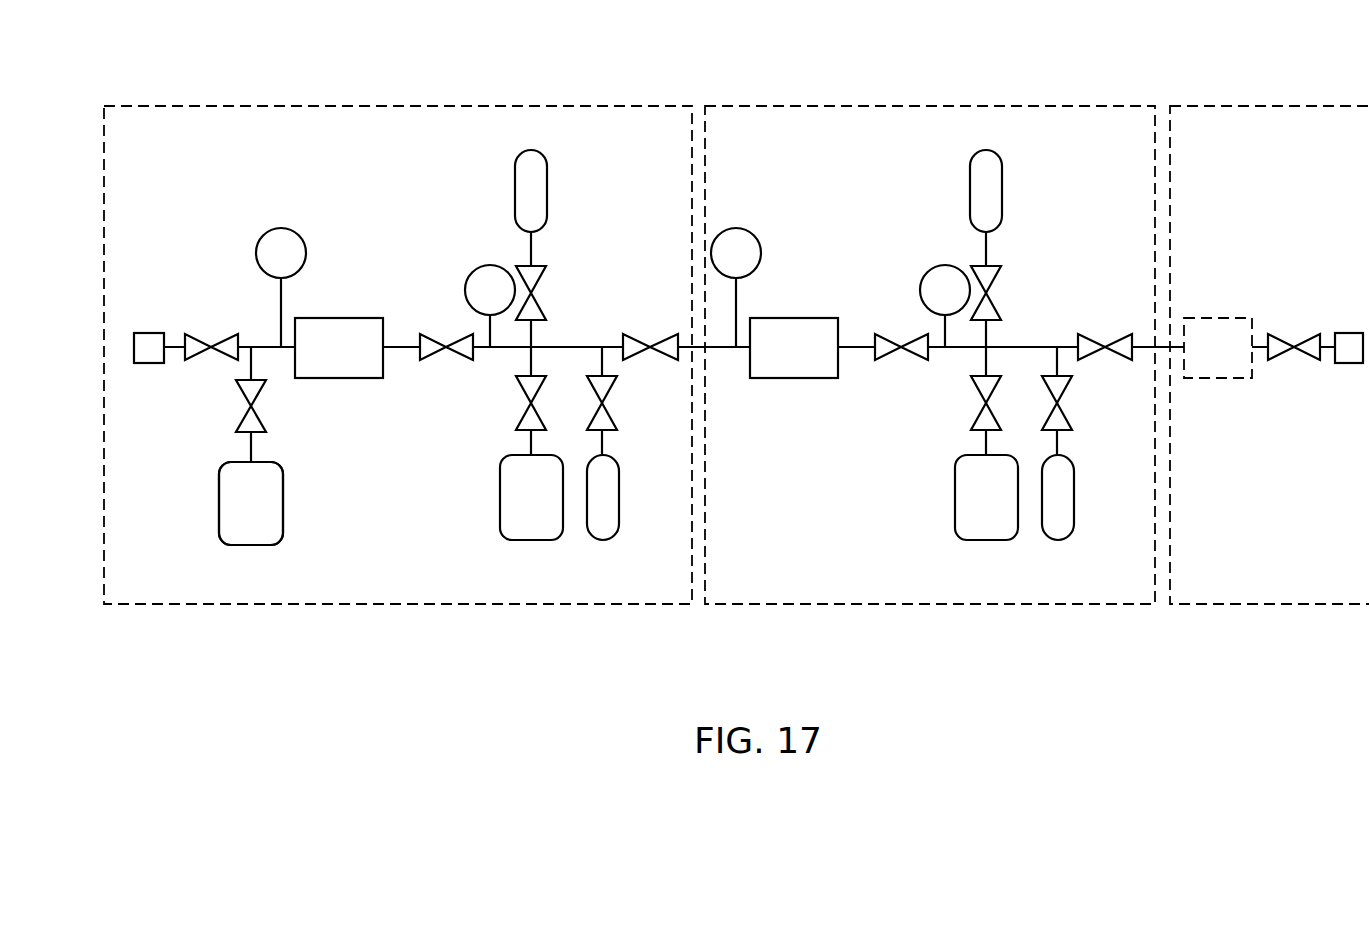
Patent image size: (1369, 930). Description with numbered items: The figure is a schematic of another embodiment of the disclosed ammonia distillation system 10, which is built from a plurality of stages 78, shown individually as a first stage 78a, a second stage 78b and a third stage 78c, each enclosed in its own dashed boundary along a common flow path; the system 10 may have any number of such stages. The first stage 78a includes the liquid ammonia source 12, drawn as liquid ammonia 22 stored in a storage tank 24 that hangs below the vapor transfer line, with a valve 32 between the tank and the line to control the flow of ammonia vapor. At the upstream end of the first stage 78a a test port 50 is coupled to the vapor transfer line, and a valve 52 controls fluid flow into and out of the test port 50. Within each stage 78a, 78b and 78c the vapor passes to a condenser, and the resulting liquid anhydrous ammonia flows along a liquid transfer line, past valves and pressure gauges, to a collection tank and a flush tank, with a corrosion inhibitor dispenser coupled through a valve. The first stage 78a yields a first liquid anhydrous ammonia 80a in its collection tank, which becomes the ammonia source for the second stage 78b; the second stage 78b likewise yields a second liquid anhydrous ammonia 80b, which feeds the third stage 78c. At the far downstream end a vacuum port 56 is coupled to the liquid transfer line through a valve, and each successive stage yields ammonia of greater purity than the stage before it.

The system 10 is at (260, 82).
The liquid ammonia source 12 is at (283, 500).
The liquid ammonia 22 is at (266, 518).
The storage tank 24 is at (219, 500).
The valve 32 is at (238, 412).
The test port 50 is at (150, 363).
The valve 52 is at (198, 338).
The vacuum port 56 is at (1348, 363).
The stages 78 is at (408, 83).
The first stage 78a is at (398, 606).
The second stage 78b is at (930, 606).
The third stage 78c is at (1272, 606).
The first liquid anhydrous ammonia 80a is at (506, 515).
The second liquid anhydrous ammonia 80b is at (961, 515).